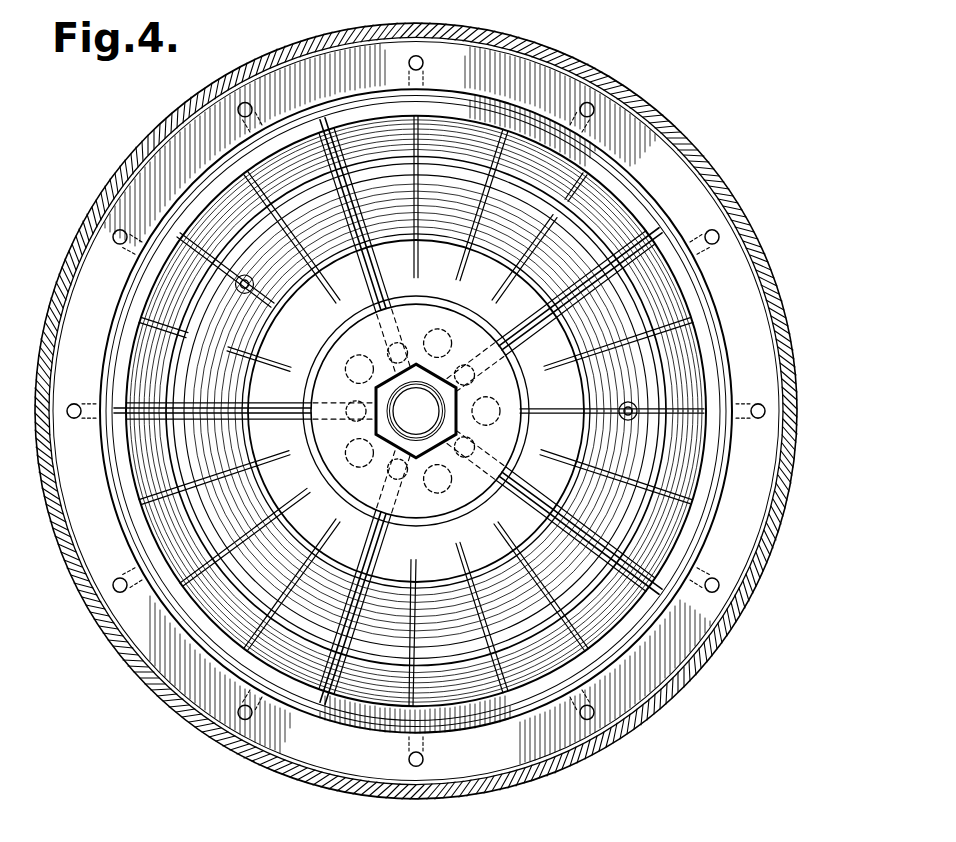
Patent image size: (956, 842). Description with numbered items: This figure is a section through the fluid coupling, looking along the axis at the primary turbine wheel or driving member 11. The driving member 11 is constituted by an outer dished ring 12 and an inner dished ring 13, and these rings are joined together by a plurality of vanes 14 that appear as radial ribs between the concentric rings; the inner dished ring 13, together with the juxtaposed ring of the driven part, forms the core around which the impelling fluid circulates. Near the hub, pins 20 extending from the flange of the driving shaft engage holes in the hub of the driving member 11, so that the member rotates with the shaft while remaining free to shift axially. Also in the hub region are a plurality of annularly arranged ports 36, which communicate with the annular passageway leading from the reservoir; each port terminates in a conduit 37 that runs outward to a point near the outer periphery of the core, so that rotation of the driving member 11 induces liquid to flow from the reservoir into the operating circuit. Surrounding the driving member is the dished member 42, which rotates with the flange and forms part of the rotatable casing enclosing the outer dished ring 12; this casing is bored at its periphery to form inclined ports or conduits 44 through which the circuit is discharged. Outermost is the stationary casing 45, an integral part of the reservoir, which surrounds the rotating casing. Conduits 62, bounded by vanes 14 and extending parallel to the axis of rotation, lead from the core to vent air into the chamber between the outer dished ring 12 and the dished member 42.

The driving member 11 is at (684, 468).
The outer dished ring 12 is at (688, 372).
The inner dished ring 13 is at (662, 313).
The vanes 14 is at (524, 232).
The pins 20 is at (352, 456).
The ports 36 is at (389, 352).
The conduit 37 is at (368, 278).
The dished member 42 is at (762, 322).
The ports or conduits 44 is at (588, 112).
The stationary casing 45 is at (698, 153).
The conduits 62 is at (268, 281).